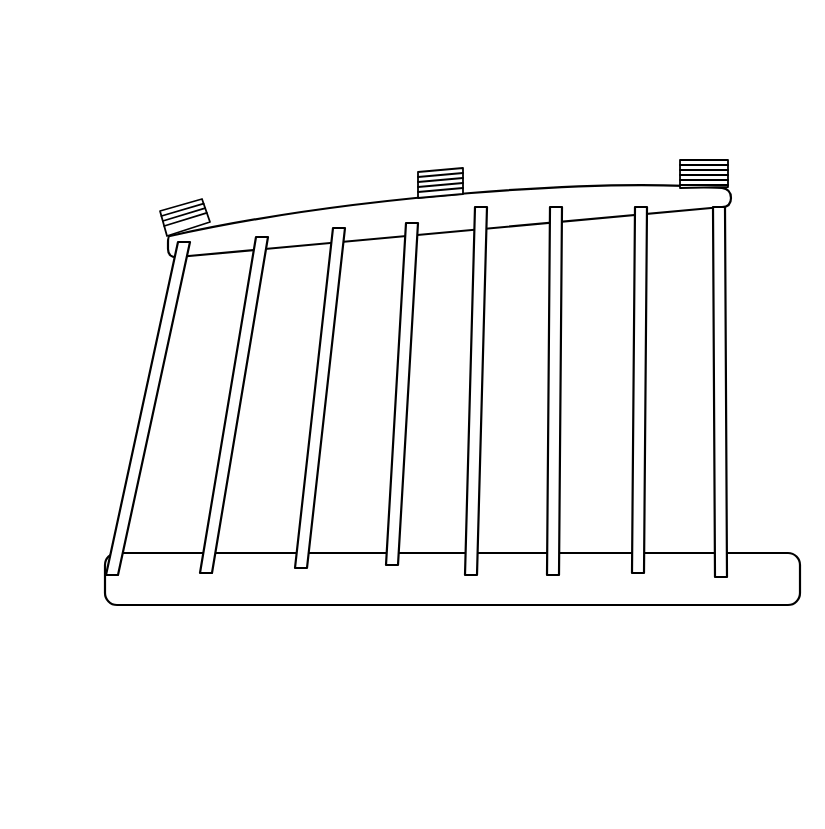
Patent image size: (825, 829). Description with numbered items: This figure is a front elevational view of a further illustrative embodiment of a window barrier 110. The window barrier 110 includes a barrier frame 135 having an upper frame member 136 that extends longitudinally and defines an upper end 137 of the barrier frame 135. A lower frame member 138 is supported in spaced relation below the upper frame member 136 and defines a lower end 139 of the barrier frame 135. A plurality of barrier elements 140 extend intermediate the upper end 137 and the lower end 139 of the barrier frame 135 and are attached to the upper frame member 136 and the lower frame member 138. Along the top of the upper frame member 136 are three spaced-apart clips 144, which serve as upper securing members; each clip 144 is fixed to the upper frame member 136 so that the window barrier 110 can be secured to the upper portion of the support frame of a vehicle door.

The window barrier 110 is at (616, 108).
The barrier frame 135 is at (420, 612).
The upper frame member 136 is at (528, 197).
The upper end 137 is at (498, 160).
The lower frame member 138 is at (609, 590).
The lower end 139 is at (288, 634).
The barrier elements 140 is at (313, 448).
The clips 144 is at (176, 201).